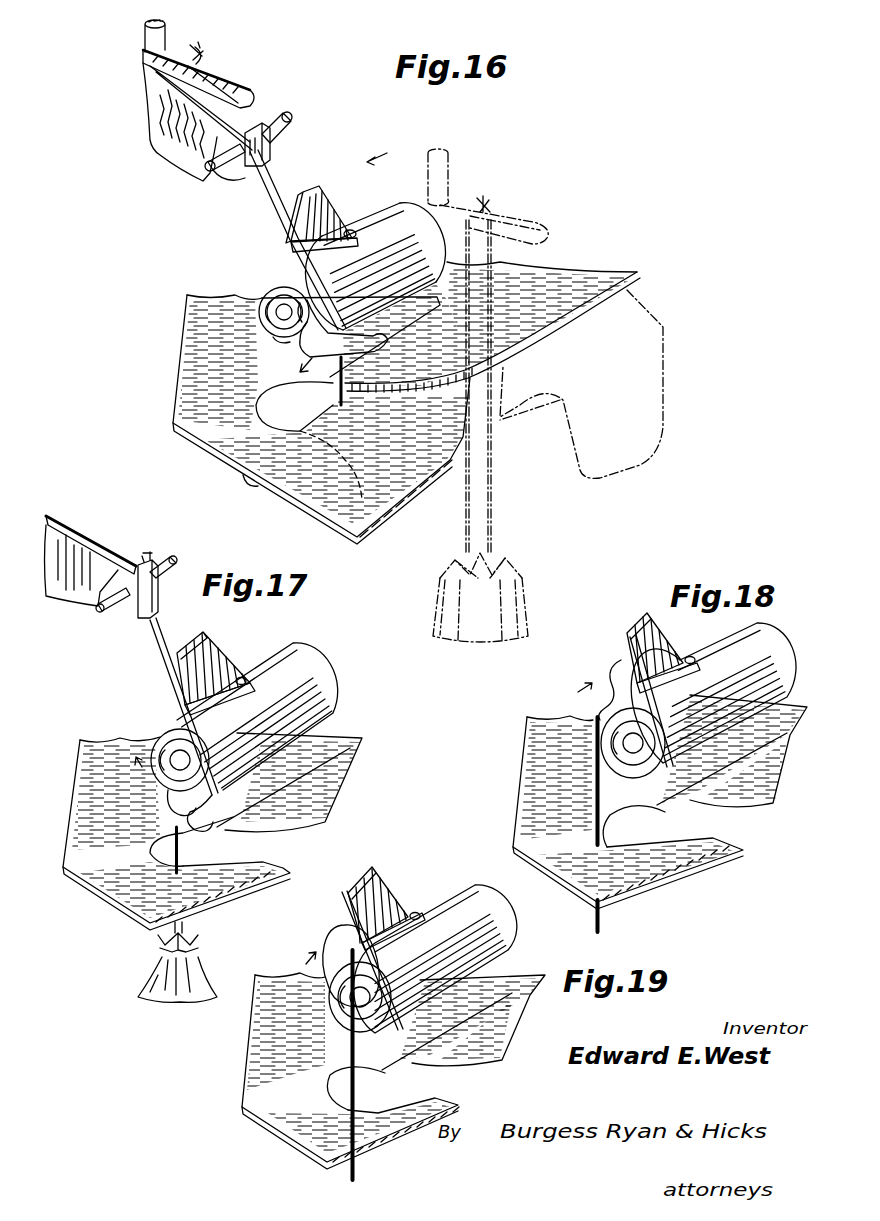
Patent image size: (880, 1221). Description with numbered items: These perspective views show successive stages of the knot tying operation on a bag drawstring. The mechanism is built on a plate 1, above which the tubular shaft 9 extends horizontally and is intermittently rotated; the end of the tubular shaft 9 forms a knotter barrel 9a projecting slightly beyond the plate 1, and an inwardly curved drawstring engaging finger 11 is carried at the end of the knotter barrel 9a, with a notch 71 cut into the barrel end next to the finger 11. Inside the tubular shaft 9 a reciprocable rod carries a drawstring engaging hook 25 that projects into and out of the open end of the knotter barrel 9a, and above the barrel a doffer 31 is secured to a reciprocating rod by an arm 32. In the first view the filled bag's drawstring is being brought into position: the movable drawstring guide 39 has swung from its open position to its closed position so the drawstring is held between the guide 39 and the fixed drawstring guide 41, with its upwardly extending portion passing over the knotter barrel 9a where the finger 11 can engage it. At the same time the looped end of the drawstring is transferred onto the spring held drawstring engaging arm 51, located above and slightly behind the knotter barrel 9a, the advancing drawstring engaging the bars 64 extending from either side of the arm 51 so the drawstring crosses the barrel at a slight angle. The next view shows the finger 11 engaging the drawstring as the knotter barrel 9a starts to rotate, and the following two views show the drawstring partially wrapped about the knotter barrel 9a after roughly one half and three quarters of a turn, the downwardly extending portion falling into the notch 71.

In FIG. 16, the plate 1 is at (645, 281).
In FIG. 17, the plate 1 is at (364, 740).
In FIG. 18, the plate 1 is at (776, 803).
In FIG. 19, the plate 1 is at (490, 1062).
In FIG. 16, the tubular shaft 9 is at (396, 208).
In FIG. 17, the tubular shaft 9 is at (312, 660).
In FIG. 18, the tubular shaft 9 is at (770, 633).
In FIG. 19, the tubular shaft 9 is at (512, 920).
In FIG. 16, the knotter barrel 9a is at (305, 280).
In FIG. 17, the knotter barrel 9a is at (178, 728).
In FIG. 18, the knotter barrel 9a is at (624, 778).
In FIG. 19, the knotter barrel 9a is at (330, 995).
In FIG. 16, the drawstring engaging finger 11 is at (377, 300).
In FIG. 17, the drawstring engaging finger 11 is at (197, 832).
In FIG. 18, the drawstring engaging finger 11 is at (617, 685).
In FIG. 19, the drawstring engaging finger 11 is at (330, 936).
In FIG. 16, the drawstring engaging hook 25 is at (300, 303).
In FIG. 17, the drawstring engaging hook 25 is at (160, 740).
In FIG. 16, the doffer 31 is at (350, 230).
In FIG. 17, the doffer 31 is at (241, 676).
In FIG. 18, the doffer 31 is at (690, 656).
In FIG. 19, the doffer 31 is at (416, 912).
In FIG. 16, the arm 32 is at (346, 178).
In FIG. 17, the arm 32 is at (204, 636).
In FIG. 18, the arm 32 is at (640, 625).
In FIG. 19, the arm 32 is at (380, 868).
In FIG. 16, the drawstring guide 39 is at (253, 488).
In FIG. 16, the fixed drawstring guide 41 is at (193, 437).
In FIG. 17, the fixed drawstring guide 41 is at (104, 893).
In FIG. 18, the fixed drawstring guide 41 is at (712, 860).
In FIG. 19, the fixed drawstring guide 41 is at (388, 1138).
In FIG. 16, the drawstring engaging arm 51 is at (172, 154).
In FIG. 17, the drawstring engaging arm 51 is at (126, 548).
In FIG. 16, the bars 64 is at (287, 124).
In FIG. 17, the bars 64 is at (154, 562).
In FIG. 16, the notch 71 is at (273, 337).